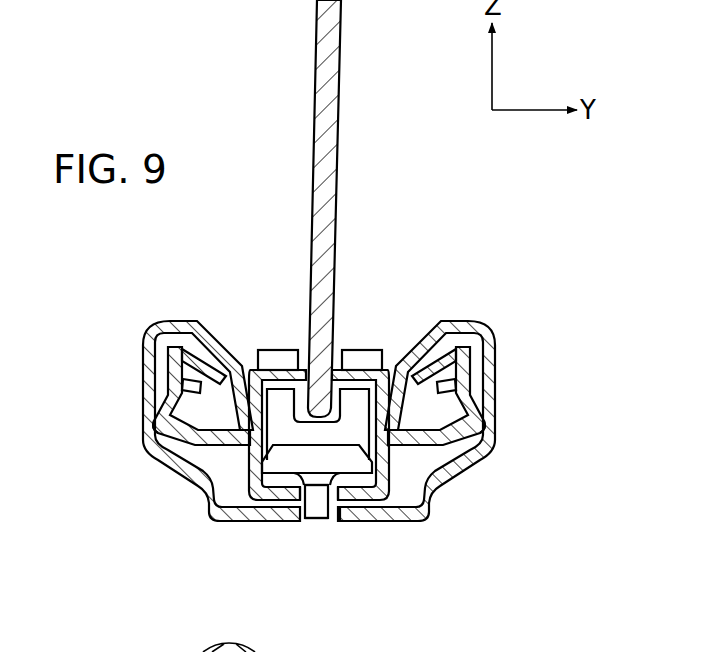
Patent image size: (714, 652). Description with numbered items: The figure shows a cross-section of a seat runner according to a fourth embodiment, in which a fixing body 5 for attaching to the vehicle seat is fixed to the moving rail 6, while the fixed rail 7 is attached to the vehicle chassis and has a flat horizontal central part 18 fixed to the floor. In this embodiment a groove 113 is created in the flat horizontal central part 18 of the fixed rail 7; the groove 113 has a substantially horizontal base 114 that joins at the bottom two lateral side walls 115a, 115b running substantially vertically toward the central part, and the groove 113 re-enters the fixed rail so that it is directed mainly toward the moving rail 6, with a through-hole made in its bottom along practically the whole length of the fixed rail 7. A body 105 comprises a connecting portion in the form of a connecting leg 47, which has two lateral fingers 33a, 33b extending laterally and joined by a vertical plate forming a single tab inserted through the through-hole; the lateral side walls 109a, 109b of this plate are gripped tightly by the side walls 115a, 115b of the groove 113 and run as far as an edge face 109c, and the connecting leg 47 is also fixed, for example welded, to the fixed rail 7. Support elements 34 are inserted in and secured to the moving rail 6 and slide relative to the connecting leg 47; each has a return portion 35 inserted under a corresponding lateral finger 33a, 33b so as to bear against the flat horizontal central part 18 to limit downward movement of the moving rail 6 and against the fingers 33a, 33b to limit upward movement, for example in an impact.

The fixing body 5 is at (275, 97).
The moving rail 6 is at (397, 350).
The fixed rail 7 is at (546, 390).
The flat horizontal central part 18 is at (362, 519).
The lateral finger 33a is at (287, 350).
The lateral finger 33b is at (357, 350).
The support element 34 is at (262, 353).
The return portion 35 is at (166, 424).
The connecting leg 47 is at (319, 503).
The body 105 is at (383, 459).
The lateral side wall 109a is at (252, 521).
The lateral side wall 109b is at (392, 521).
The edge face 109c is at (314, 520).
The groove 113 is at (303, 520).
The base 114 is at (287, 491).
The lateral side wall 115a is at (225, 508).
The lateral side wall 115b is at (428, 510).